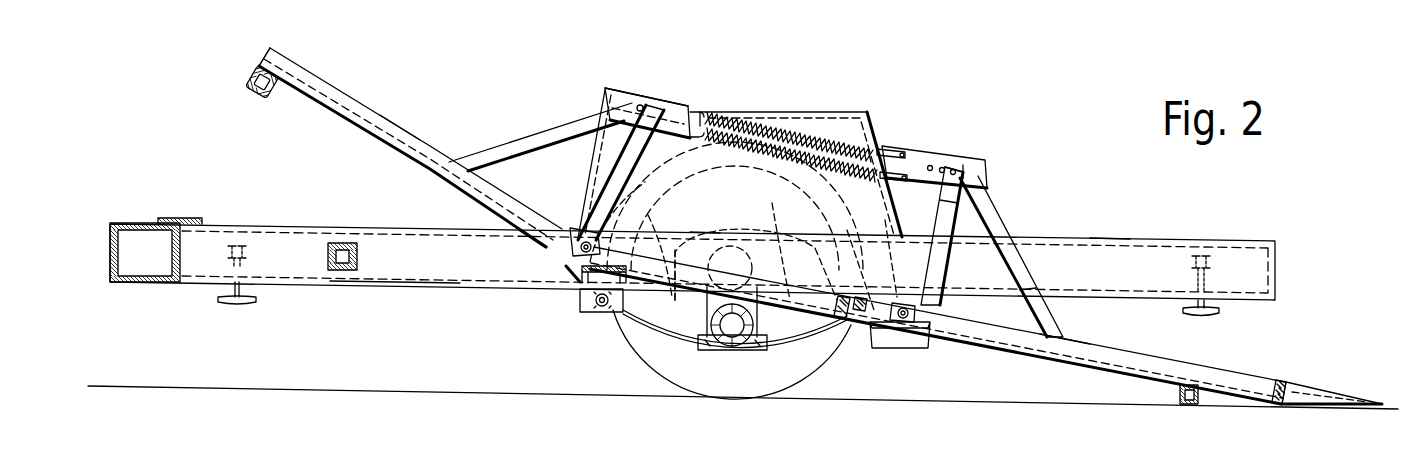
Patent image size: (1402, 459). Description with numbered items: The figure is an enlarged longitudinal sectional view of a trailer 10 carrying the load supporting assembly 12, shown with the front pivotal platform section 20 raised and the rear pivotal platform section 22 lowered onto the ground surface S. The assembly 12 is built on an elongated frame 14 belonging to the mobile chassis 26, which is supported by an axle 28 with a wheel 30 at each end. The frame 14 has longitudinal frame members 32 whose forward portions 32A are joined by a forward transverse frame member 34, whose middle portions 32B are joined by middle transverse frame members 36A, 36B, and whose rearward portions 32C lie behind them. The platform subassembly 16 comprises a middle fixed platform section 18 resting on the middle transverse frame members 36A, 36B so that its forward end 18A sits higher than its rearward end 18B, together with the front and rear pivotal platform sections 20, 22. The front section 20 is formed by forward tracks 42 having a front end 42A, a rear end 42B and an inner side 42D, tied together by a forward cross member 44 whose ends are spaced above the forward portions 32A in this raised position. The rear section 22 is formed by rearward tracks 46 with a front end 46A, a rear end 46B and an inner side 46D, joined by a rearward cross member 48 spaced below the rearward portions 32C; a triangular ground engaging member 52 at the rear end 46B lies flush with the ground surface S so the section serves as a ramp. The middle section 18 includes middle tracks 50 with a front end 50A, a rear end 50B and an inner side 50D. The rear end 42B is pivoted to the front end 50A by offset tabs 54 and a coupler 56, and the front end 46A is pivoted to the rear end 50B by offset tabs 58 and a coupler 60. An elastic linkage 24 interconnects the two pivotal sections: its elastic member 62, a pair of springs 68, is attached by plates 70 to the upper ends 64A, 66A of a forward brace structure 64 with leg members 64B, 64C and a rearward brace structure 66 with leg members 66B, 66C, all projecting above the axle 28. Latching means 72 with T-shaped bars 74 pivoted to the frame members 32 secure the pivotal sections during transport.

The trailer 10 is at (1045, 113).
The load supporting assembly 12 is at (490, 104).
The elongated frame 14 is at (553, 296).
The platform subassembly 16 is at (1048, 206).
The middle fixed platform section 18 is at (824, 278).
The forward end of middle fixed platform section 18A is at (617, 214).
The rearward end of middle fixed platform section 18B is at (897, 297).
The front pivotal platform section 20 is at (365, 147).
The rear pivotal platform section 22 is at (986, 352).
The elastic actuation linkage 24 is at (887, 118).
The mobile chassis 26 is at (450, 300).
The axle 28 is at (720, 351).
The wheel 30 is at (805, 400).
The longitudinal frame member 32 is at (404, 228).
The forward portion of longitudinal frame member 32A is at (393, 283).
The middle portion of longitudinal frame member 32B is at (706, 237).
The rearward portion of longitudinal frame member 32C is at (1108, 247).
The forward transverse frame member 34 is at (337, 270).
The forward middle transverse frame member 36A is at (600, 313).
The rearward middle transverse frame member 36B is at (920, 348).
The forward track 42 is at (326, 106).
The front end of forward track 42A is at (266, 50).
The rear end of forward track 42B is at (545, 250).
The inner side of forward track 42D is at (405, 130).
The forward cross member 44 is at (252, 86).
The rearward track 46 is at (1140, 378).
The front end of rearward track 46A is at (946, 329).
The rear end of rearward track 46B is at (1277, 383).
The inner side of rearward track 46D is at (1070, 345).
The rearward cross member 48 is at (1187, 406).
The middle track 50 is at (832, 287).
The front end of middle track 50A is at (673, 245).
The rear end of middle track 50B is at (874, 246).
The inner side of middle track 50D is at (712, 268).
The ground engaging member 52 is at (1322, 400).
The offset tab 54 is at (578, 236).
The coupler 56 is at (567, 282).
The offset tab 58 is at (910, 306).
The coupler 60 is at (895, 332).
The elastic member 62 is at (796, 110).
The forward brace structure 64 is at (576, 154).
The upper end of forward brace structure 64A is at (632, 100).
The leg member of forward brace structure 64B is at (516, 145).
The leg member of forward brace structure 64C is at (641, 147).
The rearward brace structure 66 is at (999, 214).
The upper end of rearward brace structure 66A is at (957, 174).
The leg member of rearward brace structure 66B is at (1026, 286).
The leg member of rearward brace structure 66C is at (950, 223).
The spring 68 is at (733, 110).
The plate 70 is at (639, 103).
The latching means 72 is at (210, 318).
The bar 74 is at (250, 300).
The ground surface S is at (226, 386).